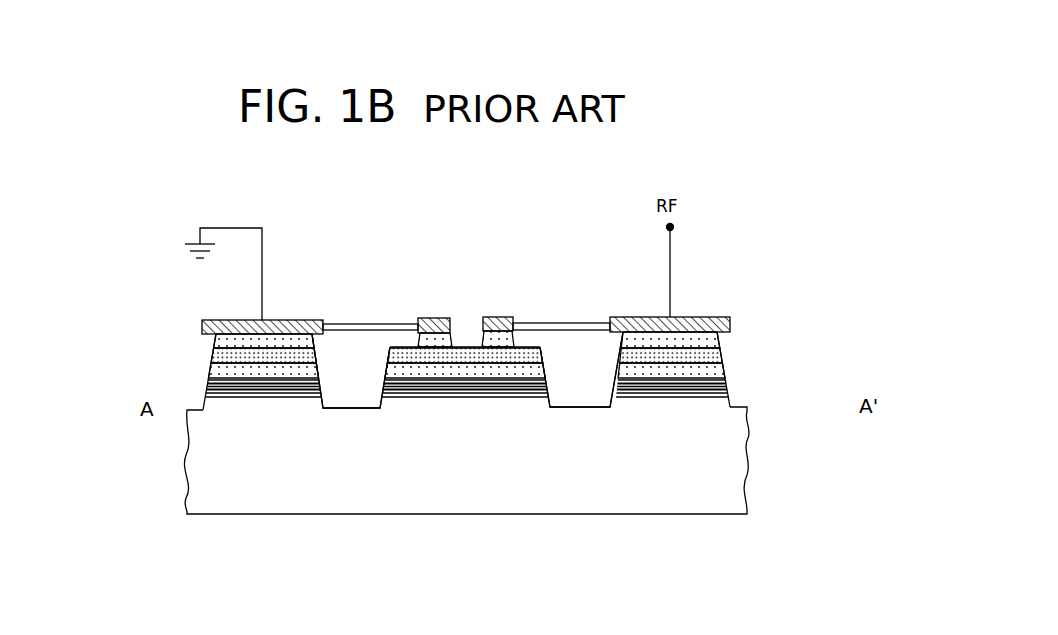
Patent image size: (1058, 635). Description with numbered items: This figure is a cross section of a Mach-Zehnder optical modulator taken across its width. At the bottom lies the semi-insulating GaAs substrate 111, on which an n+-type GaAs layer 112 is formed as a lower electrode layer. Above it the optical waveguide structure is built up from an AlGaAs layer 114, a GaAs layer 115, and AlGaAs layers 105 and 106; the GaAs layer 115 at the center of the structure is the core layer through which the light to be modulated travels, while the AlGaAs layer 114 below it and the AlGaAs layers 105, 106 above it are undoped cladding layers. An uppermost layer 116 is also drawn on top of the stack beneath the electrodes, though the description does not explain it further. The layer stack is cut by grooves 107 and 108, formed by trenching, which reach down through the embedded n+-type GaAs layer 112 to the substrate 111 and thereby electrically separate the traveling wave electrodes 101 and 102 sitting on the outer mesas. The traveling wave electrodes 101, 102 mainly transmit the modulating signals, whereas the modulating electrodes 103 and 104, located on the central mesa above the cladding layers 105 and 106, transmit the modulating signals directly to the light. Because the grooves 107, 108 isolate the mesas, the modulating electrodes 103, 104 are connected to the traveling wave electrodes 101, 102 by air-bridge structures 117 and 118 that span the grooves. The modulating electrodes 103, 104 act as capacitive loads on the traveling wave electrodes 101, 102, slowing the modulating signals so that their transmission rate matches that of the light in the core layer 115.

The traveling wave electrode 101 is at (222, 320).
The traveling wave electrode 102 is at (700, 317).
The modulating electrode 103 is at (427, 317).
The modulating electrode 104 is at (500, 317).
The AlGaAs layer 105 is at (418, 334).
The AlGaAs layer 106 is at (510, 337).
The groove 107 is at (352, 387).
The groove 108 is at (583, 380).
The semi-insulating GaAs substrate 111 is at (733, 427).
The n+-type GaAs layer 112 is at (725, 387).
The AlGaAs layer 114 is at (722, 370).
The GaAs layer 115 is at (720, 348).
The cap layer 116 is at (715, 337).
The air-bridge structure 117 is at (340, 323).
The air-bridge structure 118 is at (592, 322).